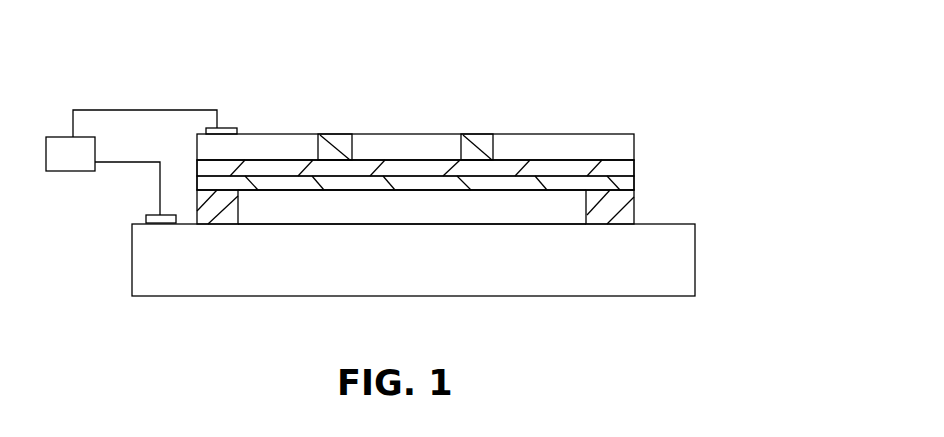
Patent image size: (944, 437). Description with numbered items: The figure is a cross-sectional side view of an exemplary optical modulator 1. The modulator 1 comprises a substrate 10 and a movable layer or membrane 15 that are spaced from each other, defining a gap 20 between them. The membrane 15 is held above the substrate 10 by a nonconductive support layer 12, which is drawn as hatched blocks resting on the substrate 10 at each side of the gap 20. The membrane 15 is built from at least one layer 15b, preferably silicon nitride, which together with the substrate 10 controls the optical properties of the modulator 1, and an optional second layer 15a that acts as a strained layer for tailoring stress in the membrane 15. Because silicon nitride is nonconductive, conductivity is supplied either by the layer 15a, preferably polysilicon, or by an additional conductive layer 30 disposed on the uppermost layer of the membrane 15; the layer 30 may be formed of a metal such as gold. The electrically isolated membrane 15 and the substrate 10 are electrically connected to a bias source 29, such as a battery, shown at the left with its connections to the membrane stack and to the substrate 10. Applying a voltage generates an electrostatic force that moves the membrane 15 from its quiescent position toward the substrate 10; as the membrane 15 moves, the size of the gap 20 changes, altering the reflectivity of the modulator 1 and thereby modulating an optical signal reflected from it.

The modulator 1 is at (208, 51).
The substrate 10 is at (391, 277).
The nonconductive support layer 12 is at (625, 208).
The membrane 15 is at (726, 165).
The second layer 15a is at (628, 168).
The layer 15b is at (634, 185).
The gap 20 is at (426, 221).
The bias source 29 is at (57, 163).
The conductive layer 30 is at (560, 148).